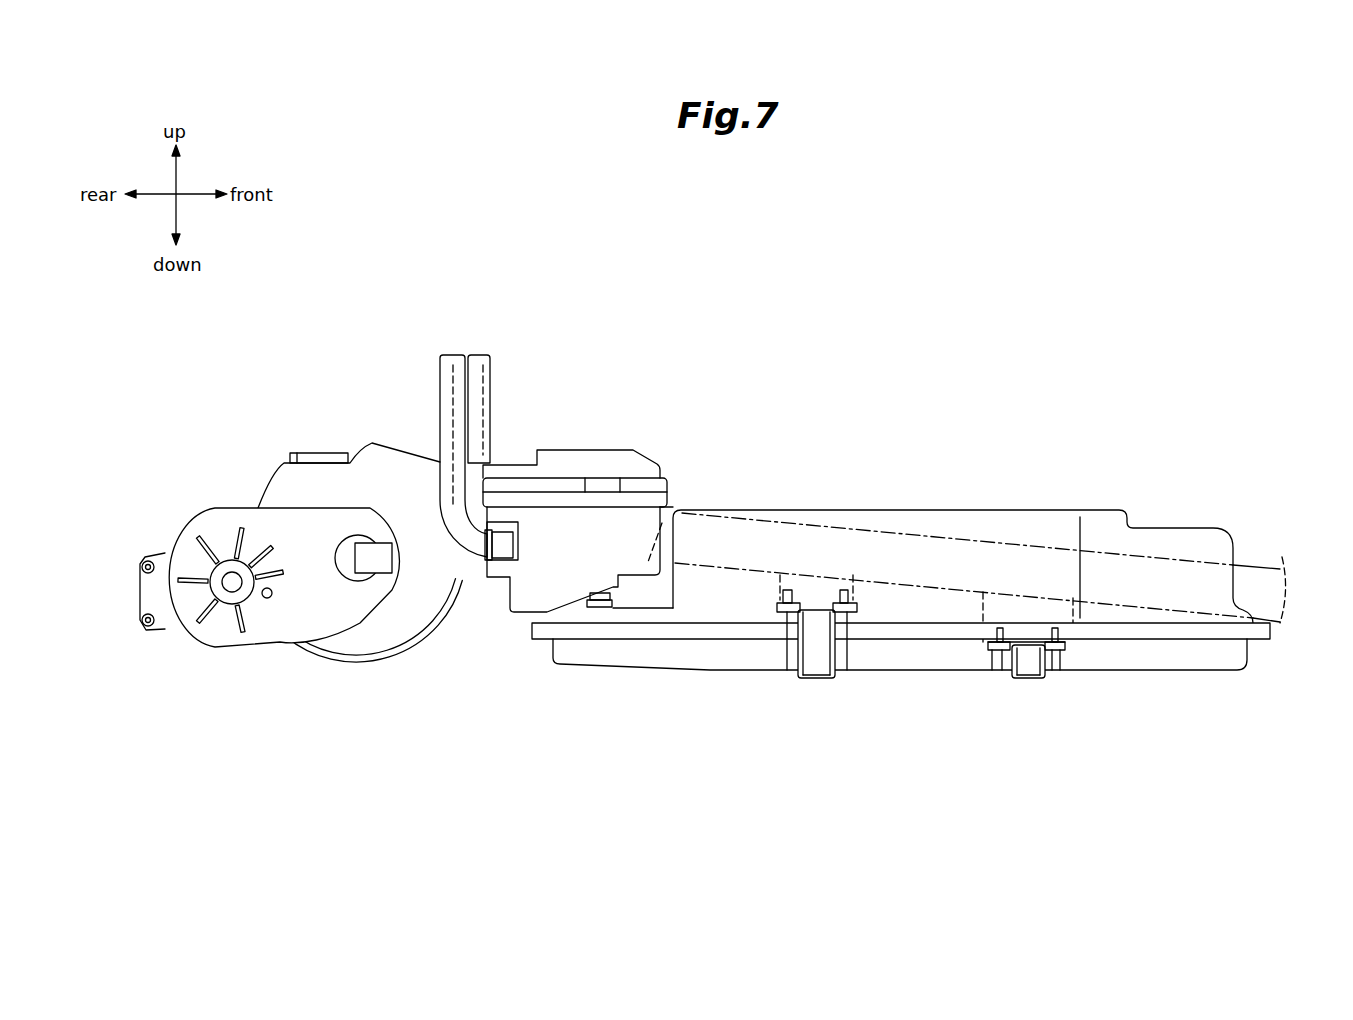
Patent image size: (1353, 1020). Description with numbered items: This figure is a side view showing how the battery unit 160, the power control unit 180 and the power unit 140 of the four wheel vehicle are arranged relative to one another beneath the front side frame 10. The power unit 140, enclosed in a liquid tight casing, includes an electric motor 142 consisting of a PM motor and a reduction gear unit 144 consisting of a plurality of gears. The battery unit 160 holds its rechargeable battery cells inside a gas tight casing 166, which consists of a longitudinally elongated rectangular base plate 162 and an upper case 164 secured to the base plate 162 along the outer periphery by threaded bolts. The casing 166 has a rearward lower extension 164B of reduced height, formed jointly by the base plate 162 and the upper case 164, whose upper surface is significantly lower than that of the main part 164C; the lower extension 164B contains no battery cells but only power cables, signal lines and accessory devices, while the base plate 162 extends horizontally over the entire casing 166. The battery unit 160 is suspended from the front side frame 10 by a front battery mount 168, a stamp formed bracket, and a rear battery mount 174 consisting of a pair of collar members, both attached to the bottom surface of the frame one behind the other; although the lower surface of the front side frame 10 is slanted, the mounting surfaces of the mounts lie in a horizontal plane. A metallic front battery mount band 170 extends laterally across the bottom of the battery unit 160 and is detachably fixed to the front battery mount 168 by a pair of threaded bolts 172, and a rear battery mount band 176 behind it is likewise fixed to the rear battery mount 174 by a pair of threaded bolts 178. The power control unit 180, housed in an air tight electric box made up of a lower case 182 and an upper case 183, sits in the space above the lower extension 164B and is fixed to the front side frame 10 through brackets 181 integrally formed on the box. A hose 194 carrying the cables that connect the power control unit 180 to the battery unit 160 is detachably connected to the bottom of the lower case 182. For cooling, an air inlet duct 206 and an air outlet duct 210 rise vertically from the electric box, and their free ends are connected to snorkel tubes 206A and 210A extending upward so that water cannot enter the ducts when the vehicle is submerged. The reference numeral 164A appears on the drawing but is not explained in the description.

The front side frame 10 is at (1253, 563).
The power unit 140 is at (301, 579).
The electric motor 142 is at (382, 640).
The reduction gear unit 144 is at (265, 632).
The battery unit 160 is at (906, 580).
The base plate 162 is at (917, 663).
The upper case 164 is at (946, 538).
The front end portion of frame member 164A is at (1218, 538).
The lower extension 164B is at (653, 618).
The main part 164C is at (945, 518).
The casing 166 is at (995, 525).
The front battery mount 168 is at (1073, 632).
The front battery mount band 170 is at (1029, 694).
The threaded bolts 172 is at (1002, 670).
The rear battery mount 174 is at (778, 580).
The rear battery mount band 176 is at (813, 666).
The threaded bolts 178 is at (790, 627).
The power control unit 180 is at (609, 550).
The brackets 181 is at (608, 485).
The lower case 182 is at (552, 560).
The upper case 183 is at (657, 468).
The hose 194 is at (597, 607).
The air inlet duct 206 is at (526, 405).
The snorkel tube 206A is at (483, 373).
The air outlet duct 210 is at (508, 503).
The snorkel tube 210A is at (453, 407).